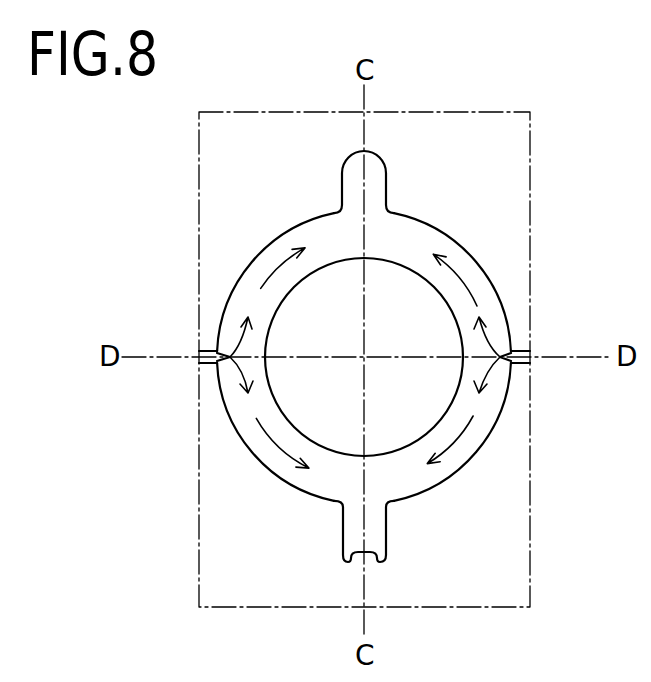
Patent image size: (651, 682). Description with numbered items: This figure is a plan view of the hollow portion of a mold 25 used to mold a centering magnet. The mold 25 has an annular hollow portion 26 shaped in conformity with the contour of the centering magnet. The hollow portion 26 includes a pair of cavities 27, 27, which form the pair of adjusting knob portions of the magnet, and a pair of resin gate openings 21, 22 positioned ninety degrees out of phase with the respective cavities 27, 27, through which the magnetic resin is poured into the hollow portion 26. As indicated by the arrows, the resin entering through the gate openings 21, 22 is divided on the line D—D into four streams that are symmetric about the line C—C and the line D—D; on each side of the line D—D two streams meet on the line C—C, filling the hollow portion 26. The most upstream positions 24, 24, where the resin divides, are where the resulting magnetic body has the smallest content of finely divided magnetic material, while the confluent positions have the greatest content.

The resin gate opening 21 is at (212, 352).
The resin gate opening 22 is at (527, 352).
The most upstream position 24 is at (251, 362).
The mold 25 is at (531, 150).
The annular hollow portion 26 is at (487, 282).
The cavity 27 is at (388, 180).